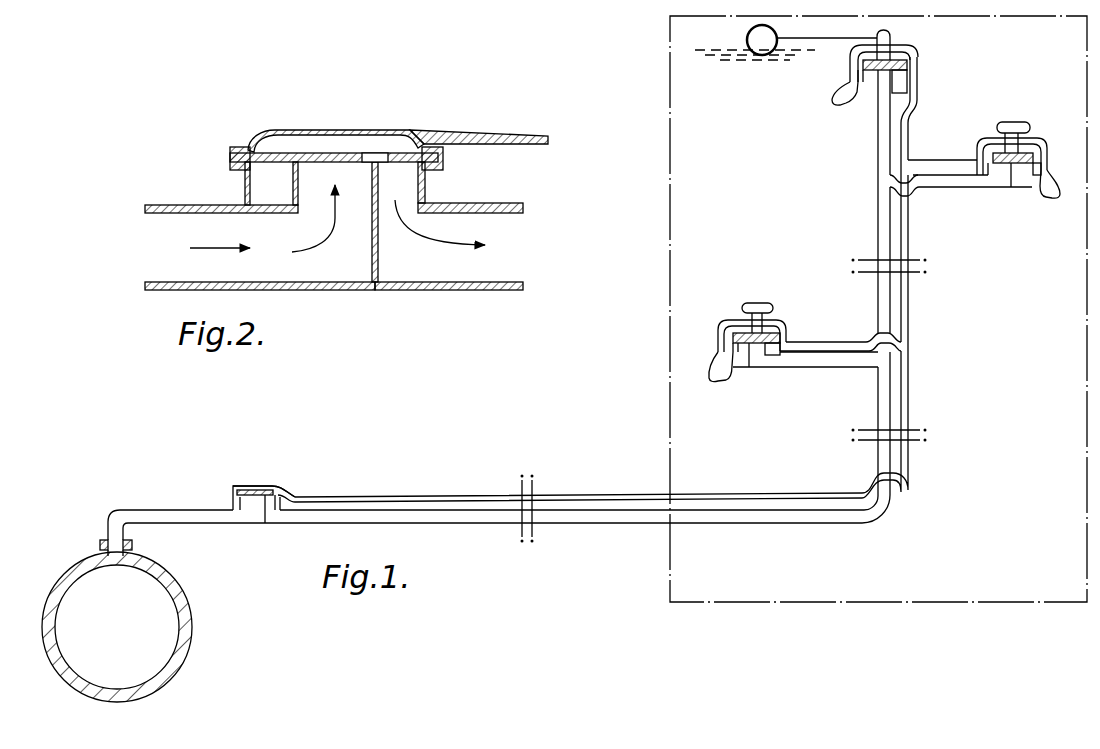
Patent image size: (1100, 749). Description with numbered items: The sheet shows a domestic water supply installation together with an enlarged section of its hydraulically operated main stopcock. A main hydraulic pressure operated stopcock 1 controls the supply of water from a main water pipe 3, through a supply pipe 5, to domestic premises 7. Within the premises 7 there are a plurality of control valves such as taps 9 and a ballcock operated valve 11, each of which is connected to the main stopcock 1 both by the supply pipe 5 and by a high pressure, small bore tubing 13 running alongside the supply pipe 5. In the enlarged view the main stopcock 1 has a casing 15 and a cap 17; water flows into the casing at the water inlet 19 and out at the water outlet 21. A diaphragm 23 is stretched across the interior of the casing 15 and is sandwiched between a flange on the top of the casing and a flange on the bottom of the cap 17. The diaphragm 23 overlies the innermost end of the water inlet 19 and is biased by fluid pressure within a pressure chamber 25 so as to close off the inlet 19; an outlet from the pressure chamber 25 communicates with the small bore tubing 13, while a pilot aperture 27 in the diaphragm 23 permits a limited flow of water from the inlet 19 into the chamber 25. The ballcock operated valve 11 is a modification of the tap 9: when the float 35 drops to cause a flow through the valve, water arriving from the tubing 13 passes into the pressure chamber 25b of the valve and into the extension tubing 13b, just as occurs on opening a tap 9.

In FIG. 2, the main hydraulic pressure operated stopcock 1 is at (437, 188).
In FIG. 1, the main hydraulic pressure operated stopcock 1 is at (263, 486).
In FIG. 1, the main water pipe 3 is at (125, 651).
In FIG. 1, the supply pipe 5 is at (469, 523).
In FIG. 1, the domestic premises 7 is at (670, 578).
In FIG. 1, the tap 9 is at (749, 301).
In FIG. 1, the ballcock operated valve 11 is at (912, 77).
In FIG. 2, the small bore tubing 13 is at (505, 115).
In FIG. 1, the small bore tubing 13 is at (600, 492).
In FIG. 1, the extension tubing 13b is at (849, 67).
In FIG. 2, the casing 15 is at (246, 191).
In FIG. 2, the cap 17 is at (245, 150).
In FIG. 2, the water inlet 19 is at (183, 276).
In FIG. 2, the water outlet 21 is at (432, 276).
In FIG. 2, the diaphragm 23 is at (362, 157).
In FIG. 1, the diaphragm 23 is at (274, 497).
In FIG. 2, the pressure chamber 25 is at (298, 147).
In FIG. 1, the pressure chamber 25 is at (236, 489).
In FIG. 1, the pressure chamber of the ballcock valve 25b is at (893, 56).
In FIG. 2, the pilot aperture 27 is at (333, 157).
In FIG. 1, the float 35 is at (746, 35).